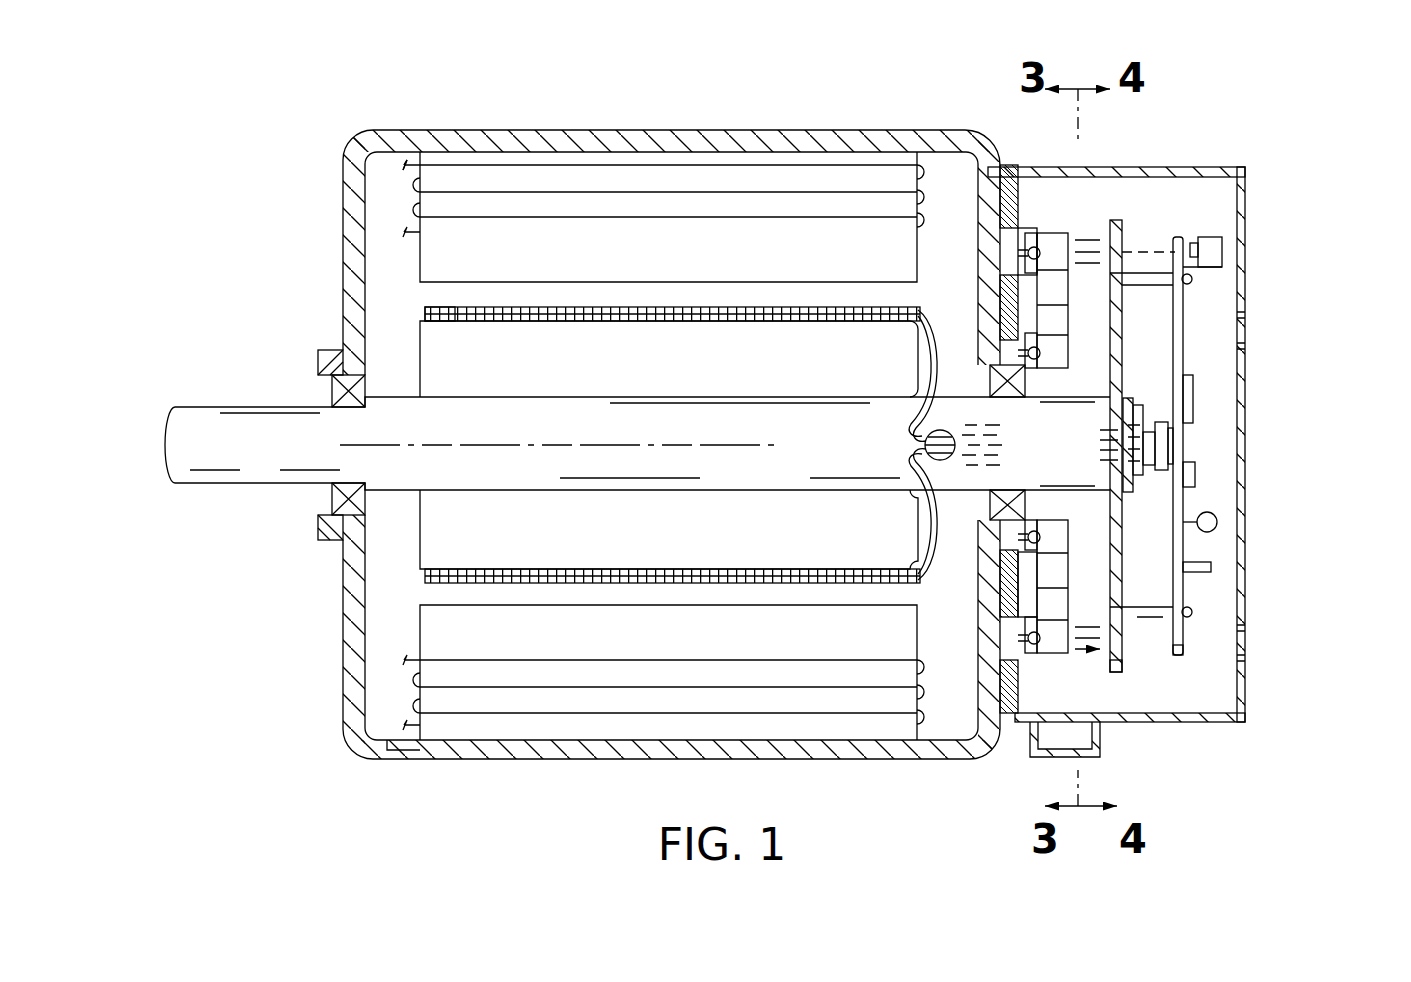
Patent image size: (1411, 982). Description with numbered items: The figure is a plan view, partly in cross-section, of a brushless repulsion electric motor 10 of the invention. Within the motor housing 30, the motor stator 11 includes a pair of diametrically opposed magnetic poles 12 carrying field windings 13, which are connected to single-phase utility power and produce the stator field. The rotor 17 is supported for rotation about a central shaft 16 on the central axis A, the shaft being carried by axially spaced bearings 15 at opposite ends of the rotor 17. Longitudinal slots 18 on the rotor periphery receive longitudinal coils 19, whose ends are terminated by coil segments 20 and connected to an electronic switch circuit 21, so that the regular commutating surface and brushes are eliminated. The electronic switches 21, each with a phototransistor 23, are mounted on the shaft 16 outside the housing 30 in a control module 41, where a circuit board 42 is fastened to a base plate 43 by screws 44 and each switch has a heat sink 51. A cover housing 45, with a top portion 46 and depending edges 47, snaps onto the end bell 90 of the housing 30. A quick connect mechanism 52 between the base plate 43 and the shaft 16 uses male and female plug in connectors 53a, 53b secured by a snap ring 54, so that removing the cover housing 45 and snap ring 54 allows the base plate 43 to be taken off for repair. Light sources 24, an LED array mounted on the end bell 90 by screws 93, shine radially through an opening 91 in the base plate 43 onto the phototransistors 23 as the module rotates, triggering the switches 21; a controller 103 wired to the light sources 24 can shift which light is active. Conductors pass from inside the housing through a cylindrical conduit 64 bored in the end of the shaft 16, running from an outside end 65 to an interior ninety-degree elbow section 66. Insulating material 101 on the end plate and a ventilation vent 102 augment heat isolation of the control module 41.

The electric motor 10 is at (272, 124).
The motor stator 11 is at (412, 197).
The magnetic poles 12 is at (437, 260).
The field windings 13 is at (579, 165).
The bearings 15 is at (334, 391).
The central shaft 16 is at (407, 396).
The rotor 17 is at (417, 319).
The longitudinal slots 18 is at (607, 404).
The longitudinal coils 19 is at (677, 311).
The coil segments 20 is at (558, 306).
The electronic switch circuit 21 is at (1212, 398).
The phototransistor 23 is at (1216, 253).
The light sources 24 is at (1055, 245).
The motor housing 30 is at (698, 414).
The control module 41 is at (1219, 440).
The circuit board 42 is at (1184, 652).
The base plate 43 is at (1117, 675).
The screws 44 is at (1192, 279).
The cover housing 45 is at (1183, 443).
The top portion 46 is at (1246, 372).
The depending edges 47 is at (1166, 167).
The heat sink 51 is at (1192, 408).
The quick connect mechanism 52 is at (1140, 503).
The male plug in connector 53a is at (1157, 457).
The female plug in connector 53b is at (1172, 436).
The snap ring 54 is at (1128, 396).
The cylindrical conduit 64 is at (975, 425).
The outside end 65 is at (1170, 460).
The interior 90° elbow section 66 is at (941, 461).
The end bell 90 is at (986, 153).
The opening 91 is at (1118, 250).
The screws 93 is at (1040, 243).
The insulating material 101 is at (1011, 695).
The ventilation vent 102 is at (1246, 343).
The controller 103 is at (1052, 742).
The central axis A is at (418, 448).